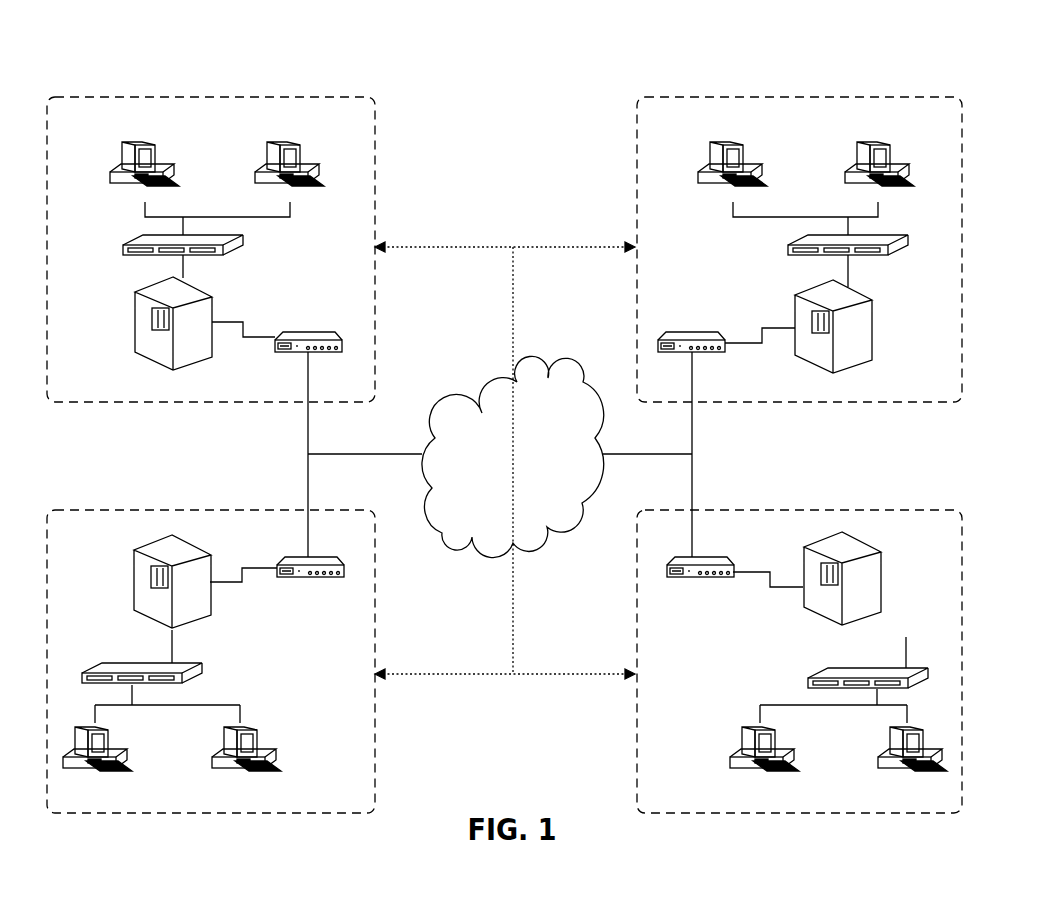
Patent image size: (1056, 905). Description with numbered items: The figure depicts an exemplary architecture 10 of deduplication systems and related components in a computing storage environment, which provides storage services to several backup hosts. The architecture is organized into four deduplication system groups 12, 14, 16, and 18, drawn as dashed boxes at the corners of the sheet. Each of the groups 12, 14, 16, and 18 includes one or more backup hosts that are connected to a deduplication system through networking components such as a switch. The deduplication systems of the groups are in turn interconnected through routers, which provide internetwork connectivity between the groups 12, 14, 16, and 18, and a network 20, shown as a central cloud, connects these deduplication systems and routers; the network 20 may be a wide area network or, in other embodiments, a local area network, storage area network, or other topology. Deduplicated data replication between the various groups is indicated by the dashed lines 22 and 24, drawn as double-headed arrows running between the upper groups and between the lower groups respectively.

The architecture 10 is at (999, 65).
The deduplication system group 12 is at (375, 120).
The deduplication system group 14 is at (375, 581).
The deduplication system group 16 is at (962, 118).
The deduplication system group 18 is at (962, 532).
The network 20 is at (533, 360).
The dashed line 22 is at (413, 248).
The dashed line 24 is at (527, 674).